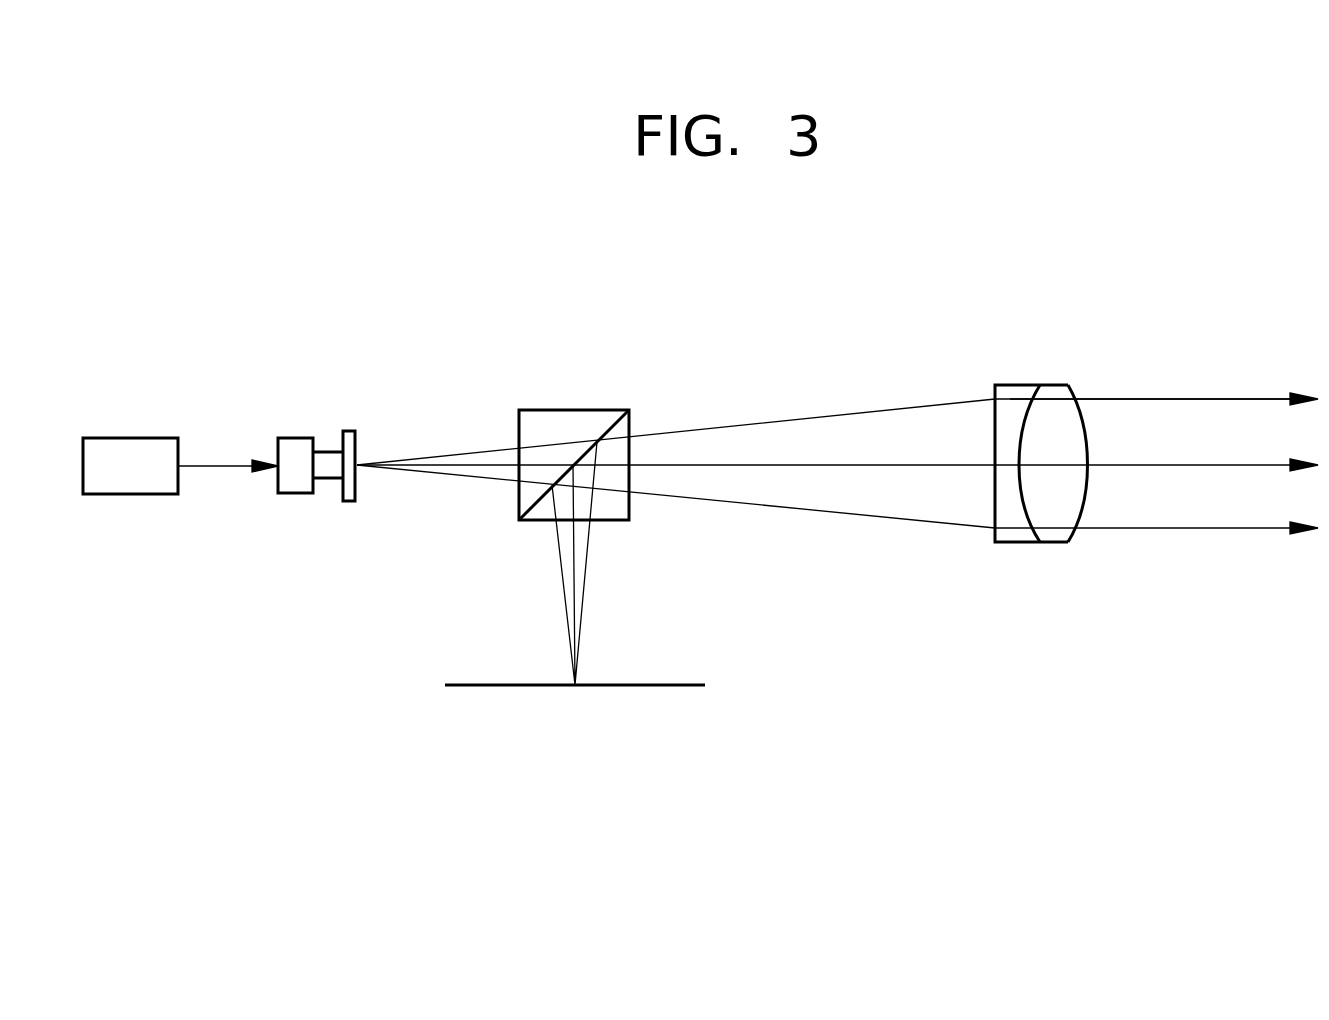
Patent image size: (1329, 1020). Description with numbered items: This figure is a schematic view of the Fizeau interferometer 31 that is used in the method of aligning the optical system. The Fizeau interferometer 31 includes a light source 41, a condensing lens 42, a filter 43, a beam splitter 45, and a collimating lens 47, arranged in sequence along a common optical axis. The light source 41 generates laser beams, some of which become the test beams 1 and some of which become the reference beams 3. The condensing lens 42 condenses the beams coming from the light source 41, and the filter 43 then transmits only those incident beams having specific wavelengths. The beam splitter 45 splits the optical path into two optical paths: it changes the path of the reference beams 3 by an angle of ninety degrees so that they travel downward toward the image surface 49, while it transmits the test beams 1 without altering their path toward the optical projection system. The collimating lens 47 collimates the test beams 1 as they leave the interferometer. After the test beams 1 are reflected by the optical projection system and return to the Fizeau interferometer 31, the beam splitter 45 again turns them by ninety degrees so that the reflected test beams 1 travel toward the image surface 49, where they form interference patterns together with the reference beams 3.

The Fizeau interferometer 31 is at (767, 327).
The light source 41 is at (140, 494).
The condensing lens 42 is at (295, 493).
The filter 43 is at (350, 501).
The beam splitter 45 is at (590, 409).
The reference beams 3 is at (585, 580).
The image surface 49 is at (660, 688).
The collimating lens 47 is at (1018, 385).
The test beams 1 is at (1175, 398).